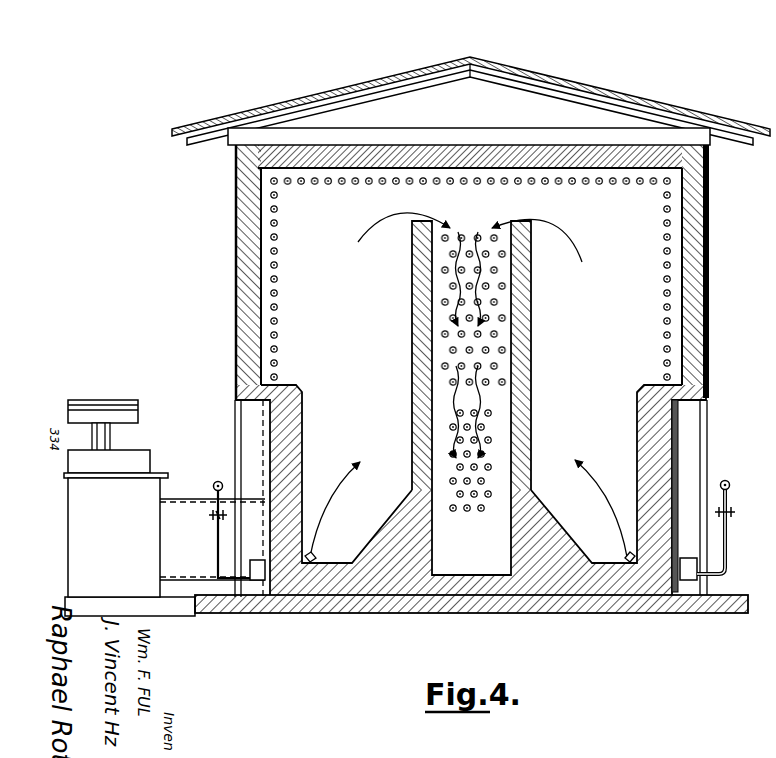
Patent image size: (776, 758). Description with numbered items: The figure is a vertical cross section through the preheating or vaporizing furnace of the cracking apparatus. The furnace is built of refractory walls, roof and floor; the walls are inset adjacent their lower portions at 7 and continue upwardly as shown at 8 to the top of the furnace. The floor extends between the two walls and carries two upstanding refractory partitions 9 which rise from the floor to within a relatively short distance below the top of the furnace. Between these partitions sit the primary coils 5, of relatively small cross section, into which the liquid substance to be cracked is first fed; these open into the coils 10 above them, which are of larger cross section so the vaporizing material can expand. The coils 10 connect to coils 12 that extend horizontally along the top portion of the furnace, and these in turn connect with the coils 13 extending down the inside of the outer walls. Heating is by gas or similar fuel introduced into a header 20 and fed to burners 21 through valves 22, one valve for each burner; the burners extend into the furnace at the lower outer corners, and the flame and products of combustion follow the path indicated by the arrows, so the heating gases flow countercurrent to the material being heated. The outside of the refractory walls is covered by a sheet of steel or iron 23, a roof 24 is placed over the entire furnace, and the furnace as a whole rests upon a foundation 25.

The primary coils 5 is at (490, 463).
The inset lower wall portion 7 is at (673, 458).
The upper wall portion 8 is at (711, 280).
The upstanding partitions 9 is at (414, 373).
The coils 10 is at (496, 333).
The coils 12 is at (343, 183).
The coils 13 is at (278, 295).
The header 20 is at (218, 480).
The burners 21 is at (313, 555).
The valves 22 is at (210, 516).
The sheet of steel or iron 23 is at (709, 243).
The roof 24 is at (612, 88).
The foundation 25 is at (547, 612).